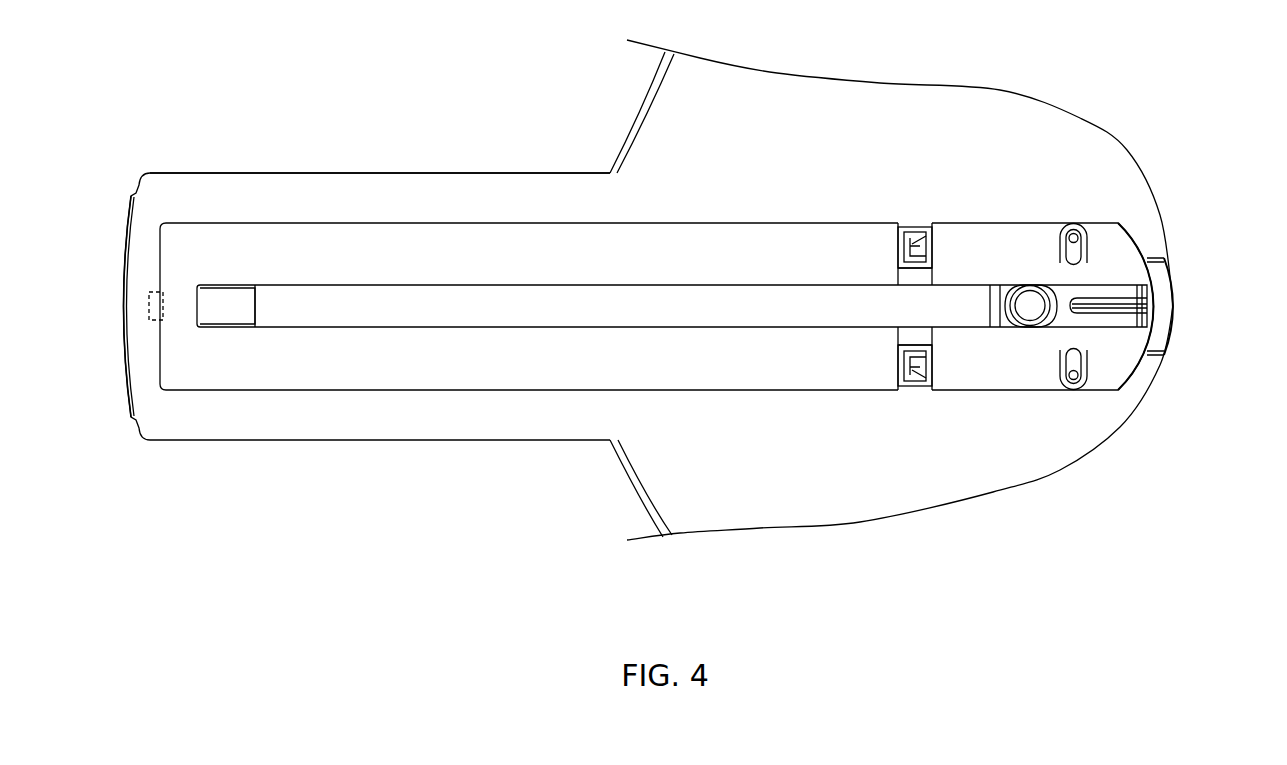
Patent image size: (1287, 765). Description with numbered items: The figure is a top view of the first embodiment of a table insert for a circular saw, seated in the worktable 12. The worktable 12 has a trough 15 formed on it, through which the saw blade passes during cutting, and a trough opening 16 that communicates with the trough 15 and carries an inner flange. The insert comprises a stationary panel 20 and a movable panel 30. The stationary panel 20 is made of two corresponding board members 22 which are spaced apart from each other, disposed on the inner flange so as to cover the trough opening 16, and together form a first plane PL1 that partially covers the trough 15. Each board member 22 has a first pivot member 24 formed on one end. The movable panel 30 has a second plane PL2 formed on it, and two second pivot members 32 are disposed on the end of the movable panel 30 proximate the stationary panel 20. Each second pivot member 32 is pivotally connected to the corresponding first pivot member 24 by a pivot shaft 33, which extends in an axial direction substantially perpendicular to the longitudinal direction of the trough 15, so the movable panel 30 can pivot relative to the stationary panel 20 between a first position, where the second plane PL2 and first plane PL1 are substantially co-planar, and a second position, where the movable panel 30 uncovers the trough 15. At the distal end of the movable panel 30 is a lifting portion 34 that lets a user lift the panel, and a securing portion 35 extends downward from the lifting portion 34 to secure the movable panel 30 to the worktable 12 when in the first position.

The worktable 12 is at (480, 425).
The trough 15 is at (606, 303).
The trough opening 16 is at (313, 389).
The stationary panel 20 is at (1245, 167).
The board member 22 is at (1141, 224).
The first pivot member 24 is at (925, 248).
The movable panel 30 is at (452, 185).
The second pivot member 32 is at (898, 228).
The pivot shaft 33 is at (932, 222).
The lifting portion 34 is at (176, 297).
The securing portion 35 is at (148, 305).
The first plane PL1 is at (1012, 237).
The second plane PL2 is at (358, 252).